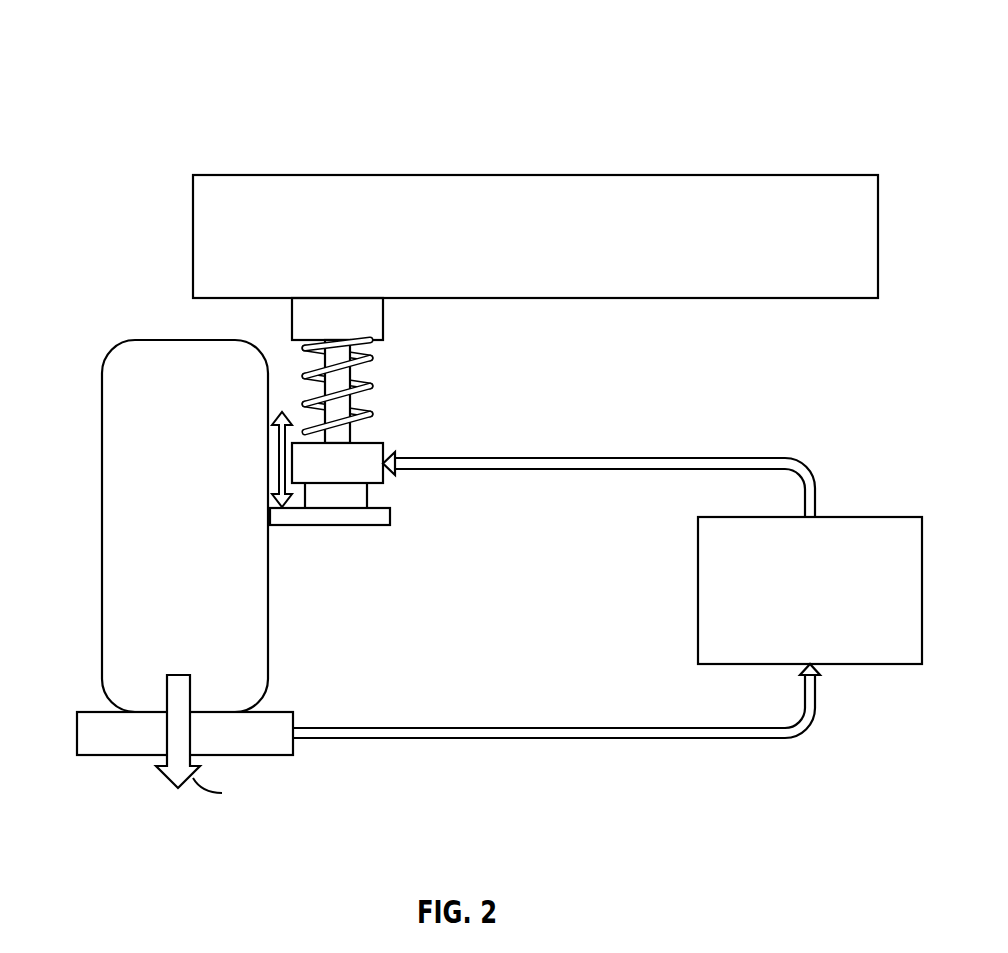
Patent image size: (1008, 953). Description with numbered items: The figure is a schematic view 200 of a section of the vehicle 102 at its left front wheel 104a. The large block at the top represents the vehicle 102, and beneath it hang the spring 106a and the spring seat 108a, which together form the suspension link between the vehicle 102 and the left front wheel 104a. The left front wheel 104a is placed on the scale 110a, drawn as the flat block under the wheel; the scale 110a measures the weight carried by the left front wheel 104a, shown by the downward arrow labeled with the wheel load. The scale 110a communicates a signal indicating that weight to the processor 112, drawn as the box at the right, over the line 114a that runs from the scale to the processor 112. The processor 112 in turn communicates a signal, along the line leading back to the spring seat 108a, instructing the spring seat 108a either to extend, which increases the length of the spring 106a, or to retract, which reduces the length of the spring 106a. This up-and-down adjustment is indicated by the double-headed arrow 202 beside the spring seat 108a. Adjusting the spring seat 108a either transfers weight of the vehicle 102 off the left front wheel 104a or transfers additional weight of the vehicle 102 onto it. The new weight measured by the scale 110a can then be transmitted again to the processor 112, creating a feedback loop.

The schematic view 200 is at (184, 34).
The vehicle 102 is at (510, 174).
The left front wheel 104a is at (102, 531).
The spring 106a is at (360, 384).
The spring seat 108a is at (357, 485).
The scale 110a is at (95, 757).
The processor 112 is at (855, 665).
The communication line 114a is at (537, 740).
The arrow 202 is at (279, 455).